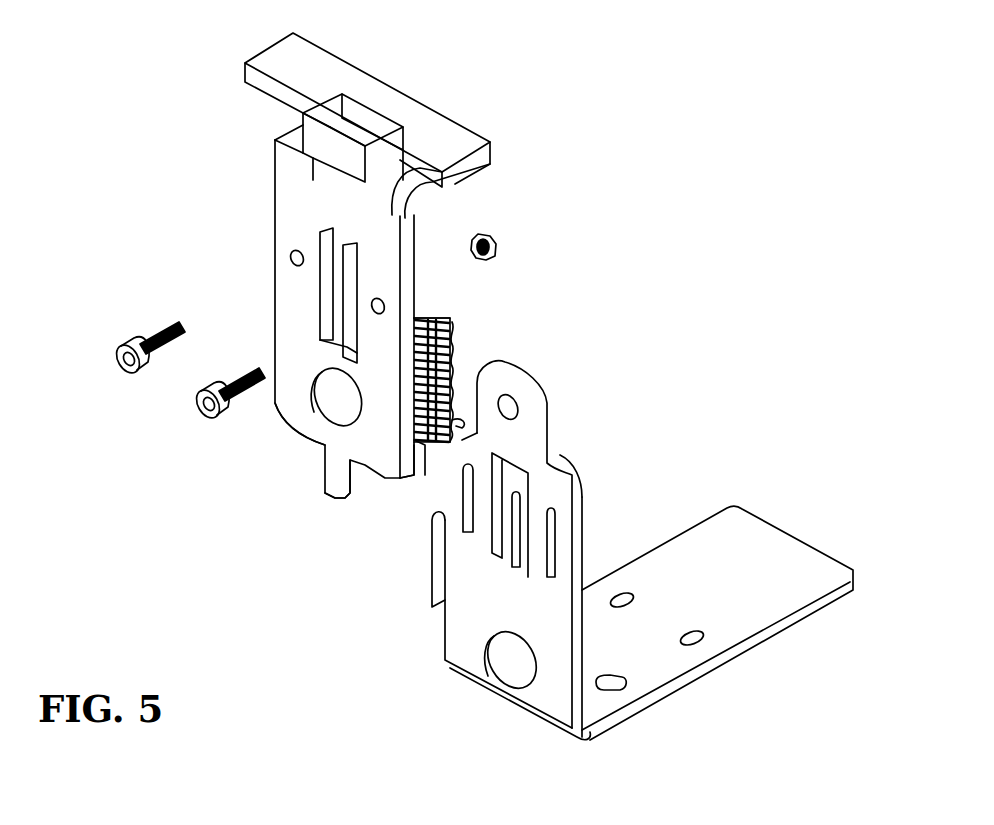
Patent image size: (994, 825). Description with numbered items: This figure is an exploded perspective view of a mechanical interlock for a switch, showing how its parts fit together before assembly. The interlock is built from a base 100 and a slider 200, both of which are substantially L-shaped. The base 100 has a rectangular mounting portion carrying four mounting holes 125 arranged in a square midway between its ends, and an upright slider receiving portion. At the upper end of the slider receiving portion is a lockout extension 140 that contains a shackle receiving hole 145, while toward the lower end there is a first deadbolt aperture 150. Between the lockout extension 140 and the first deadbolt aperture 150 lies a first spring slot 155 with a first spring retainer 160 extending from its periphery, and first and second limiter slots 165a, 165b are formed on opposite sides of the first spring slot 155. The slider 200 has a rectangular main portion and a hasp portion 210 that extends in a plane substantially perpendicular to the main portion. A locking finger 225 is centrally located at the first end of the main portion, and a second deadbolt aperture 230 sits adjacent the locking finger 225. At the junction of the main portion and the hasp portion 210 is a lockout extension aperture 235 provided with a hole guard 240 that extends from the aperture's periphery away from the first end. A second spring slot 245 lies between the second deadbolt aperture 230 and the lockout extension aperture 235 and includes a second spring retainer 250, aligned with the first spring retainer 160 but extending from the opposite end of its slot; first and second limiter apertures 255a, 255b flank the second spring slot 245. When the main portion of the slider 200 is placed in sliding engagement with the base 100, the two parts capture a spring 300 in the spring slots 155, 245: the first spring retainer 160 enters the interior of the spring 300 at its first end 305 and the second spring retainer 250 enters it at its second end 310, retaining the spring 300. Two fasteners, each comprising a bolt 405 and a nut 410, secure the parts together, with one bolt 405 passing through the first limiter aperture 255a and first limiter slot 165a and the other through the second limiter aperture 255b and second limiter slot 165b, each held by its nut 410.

The base 100 is at (823, 607).
The mounting holes 125 is at (640, 600).
The lockout extension 140 is at (503, 376).
The shackle receiving hole 145 is at (514, 409).
The first deadbolt aperture 150 is at (517, 657).
The first spring slot 155 is at (528, 487).
The first spring retainer 160 is at (508, 540).
The first limiter slot 165a is at (565, 550).
The second limiter slot 165b is at (473, 535).
The slider 200 is at (268, 330).
The hasp portion 210 is at (373, 100).
The locking finger 225 is at (337, 495).
The second deadbolt aperture 230 is at (347, 392).
The lockout extension aperture 235 is at (375, 167).
The hole guard 240 is at (340, 173).
The second spring slot 245 is at (322, 375).
The second spring retainer 250 is at (340, 282).
The first limiter aperture 255a is at (384, 305).
The second limiter aperture 255b is at (291, 258).
The spring 300 is at (455, 376).
The first end of the spring 305 is at (428, 445).
The second end of the spring 310 is at (437, 318).
The bolt 405 is at (120, 348).
The nut 410 is at (494, 248).